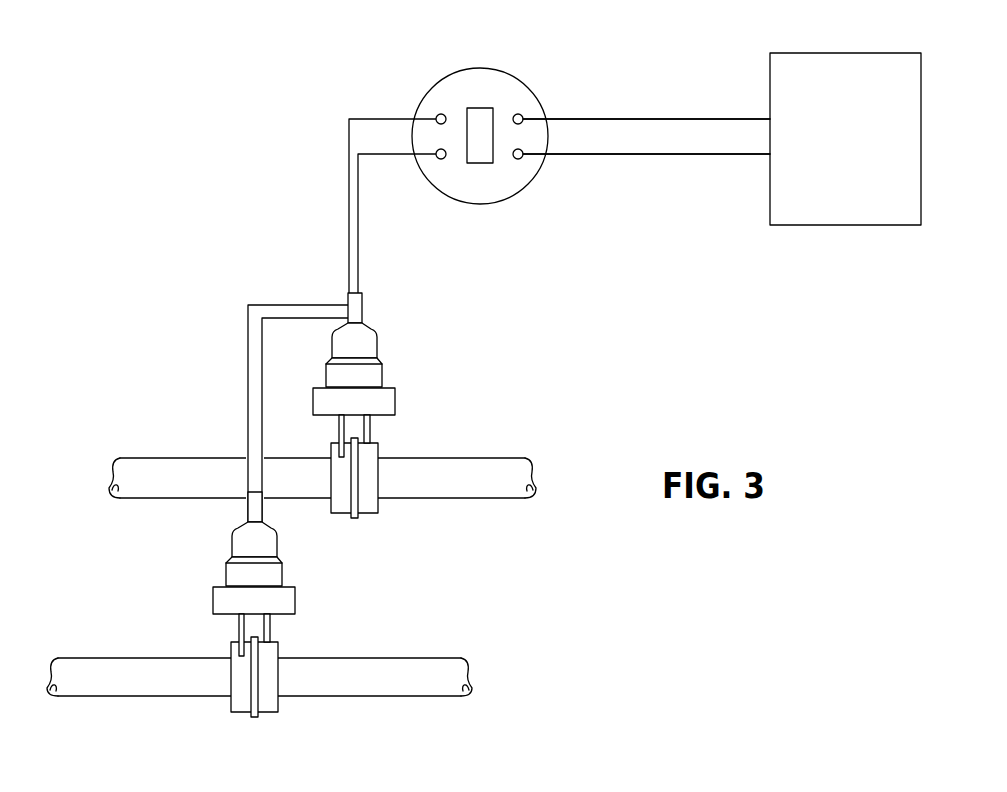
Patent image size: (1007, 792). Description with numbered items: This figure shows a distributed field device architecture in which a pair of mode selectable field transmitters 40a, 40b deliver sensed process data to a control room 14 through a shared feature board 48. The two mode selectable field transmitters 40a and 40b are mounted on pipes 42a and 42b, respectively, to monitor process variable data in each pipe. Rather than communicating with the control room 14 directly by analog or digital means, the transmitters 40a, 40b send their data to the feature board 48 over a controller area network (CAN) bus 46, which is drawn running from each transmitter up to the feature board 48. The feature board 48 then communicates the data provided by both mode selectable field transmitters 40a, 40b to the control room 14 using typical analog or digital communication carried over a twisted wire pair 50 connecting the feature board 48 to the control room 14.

The control room 14 is at (832, 200).
The mode selectable field transmitter 40a is at (379, 346).
The mode selectable field transmitter 40b is at (229, 546).
The pipe 42a is at (433, 498).
The pipe 42b is at (335, 696).
The controller area network (CAN) bus 46 is at (349, 165).
The feature board 48 is at (480, 108).
The twisted wire pair 50 is at (648, 116).